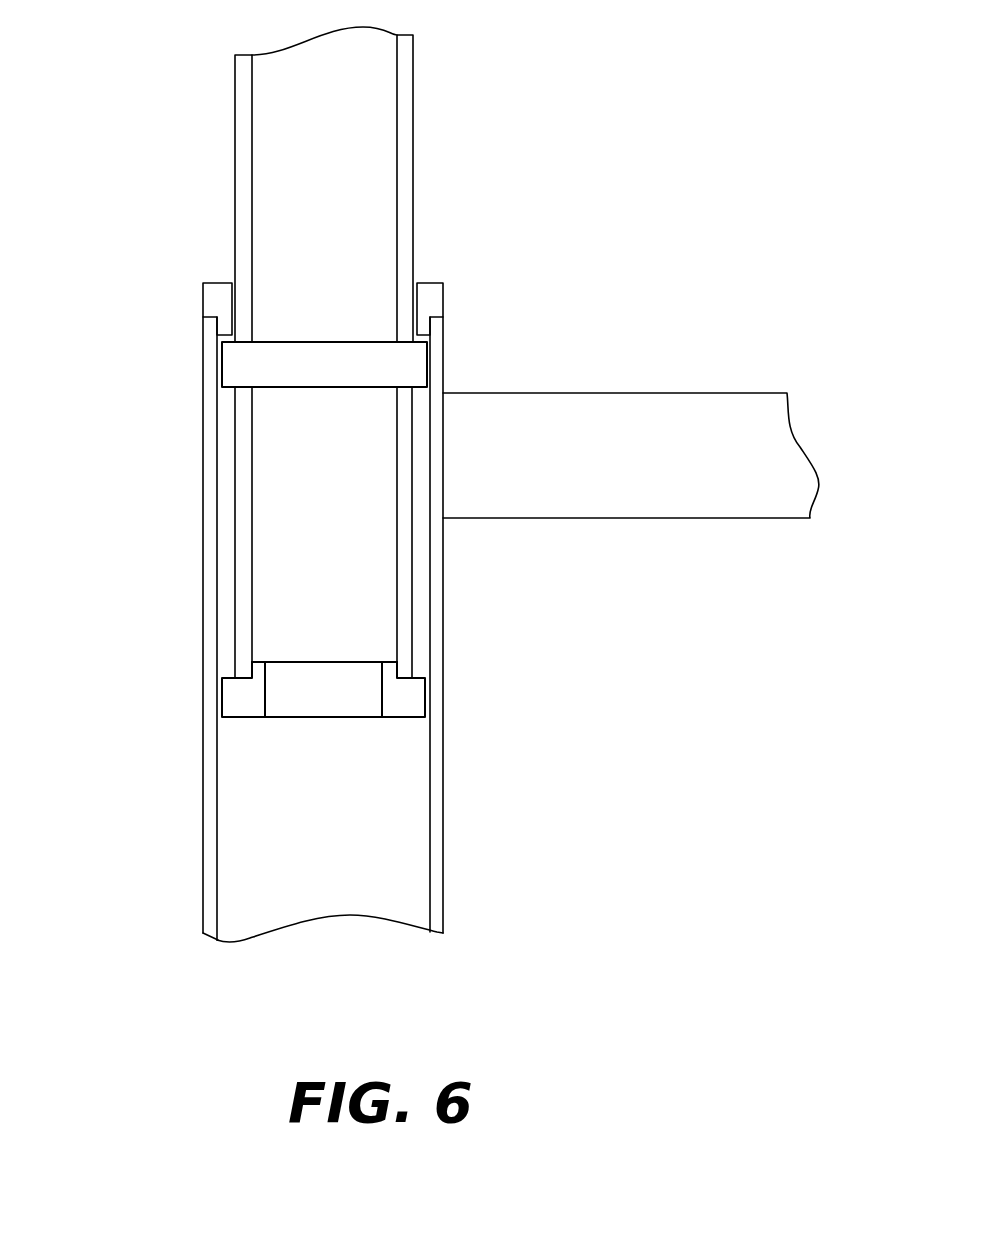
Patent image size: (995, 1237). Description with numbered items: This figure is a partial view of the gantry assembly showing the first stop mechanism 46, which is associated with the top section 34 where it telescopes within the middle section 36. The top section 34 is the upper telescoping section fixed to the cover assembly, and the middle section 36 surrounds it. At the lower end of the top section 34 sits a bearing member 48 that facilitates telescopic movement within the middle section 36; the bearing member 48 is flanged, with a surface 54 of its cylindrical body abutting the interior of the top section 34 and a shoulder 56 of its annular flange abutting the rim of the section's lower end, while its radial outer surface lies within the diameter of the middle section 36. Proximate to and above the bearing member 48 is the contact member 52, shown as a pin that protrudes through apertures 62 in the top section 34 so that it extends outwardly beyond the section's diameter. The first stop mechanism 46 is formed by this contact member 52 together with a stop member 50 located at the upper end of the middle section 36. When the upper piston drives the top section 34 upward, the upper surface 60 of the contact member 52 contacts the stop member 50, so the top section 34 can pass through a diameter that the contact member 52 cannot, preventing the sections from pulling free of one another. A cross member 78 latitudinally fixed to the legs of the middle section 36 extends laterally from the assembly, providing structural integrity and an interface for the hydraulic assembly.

The top section 34 is at (412, 83).
The middle section 36 is at (445, 850).
The first stop mechanism 46 is at (113, 533).
The bearing member 48 is at (250, 698).
The stop member 50 is at (445, 282).
The contact member 52 is at (290, 388).
The surface 54 is at (397, 670).
The shoulder 56 is at (420, 677).
The upper surface 60 is at (223, 332).
The apertures 62 is at (400, 388).
The cross member 78 is at (735, 520).